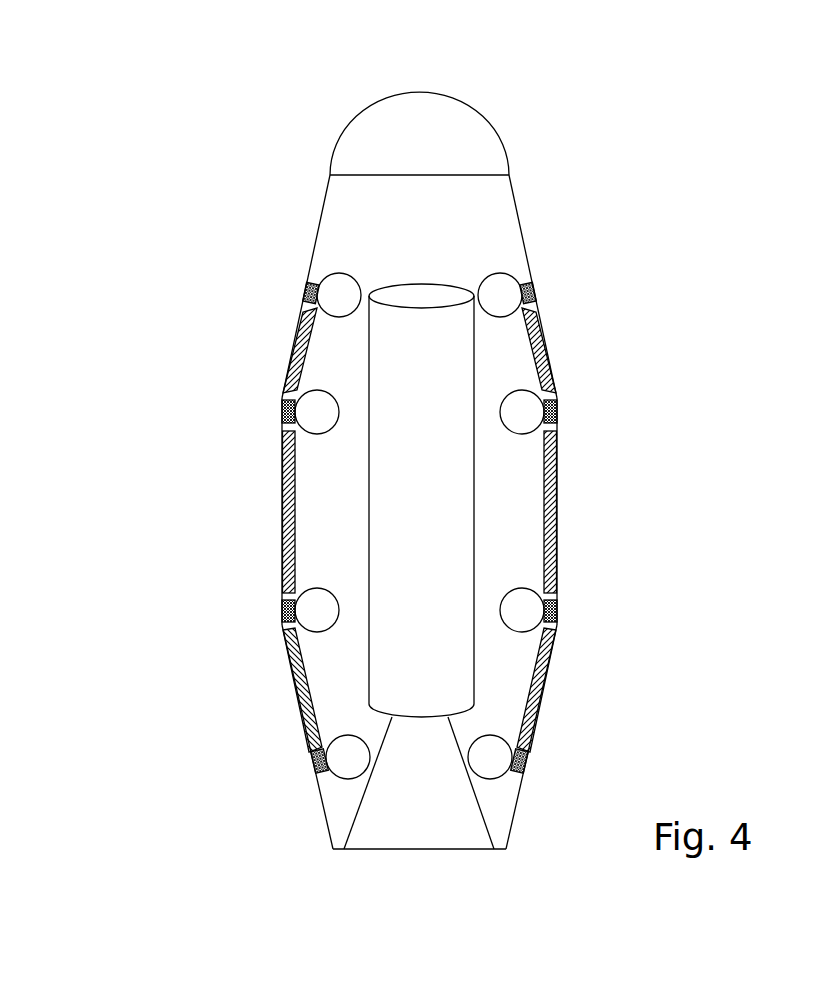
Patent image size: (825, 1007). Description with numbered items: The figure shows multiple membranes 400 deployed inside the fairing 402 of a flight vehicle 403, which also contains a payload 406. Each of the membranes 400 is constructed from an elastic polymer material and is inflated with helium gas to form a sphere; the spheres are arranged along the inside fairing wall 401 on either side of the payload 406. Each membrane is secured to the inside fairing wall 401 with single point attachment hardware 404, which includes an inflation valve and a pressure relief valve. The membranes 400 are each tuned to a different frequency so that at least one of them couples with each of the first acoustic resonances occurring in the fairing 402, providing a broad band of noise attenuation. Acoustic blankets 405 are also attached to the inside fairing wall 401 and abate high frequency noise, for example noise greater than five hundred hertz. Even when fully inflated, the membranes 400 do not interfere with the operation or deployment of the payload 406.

The membranes 400 is at (283, 398).
The inside fairing wall 401 is at (522, 240).
The fairing 402 is at (310, 215).
The flight vehicle 403 is at (514, 76).
The single point attachment hardware 404 is at (304, 298).
The acoustic blankets 405 is at (545, 533).
The payload 406 is at (421, 500).